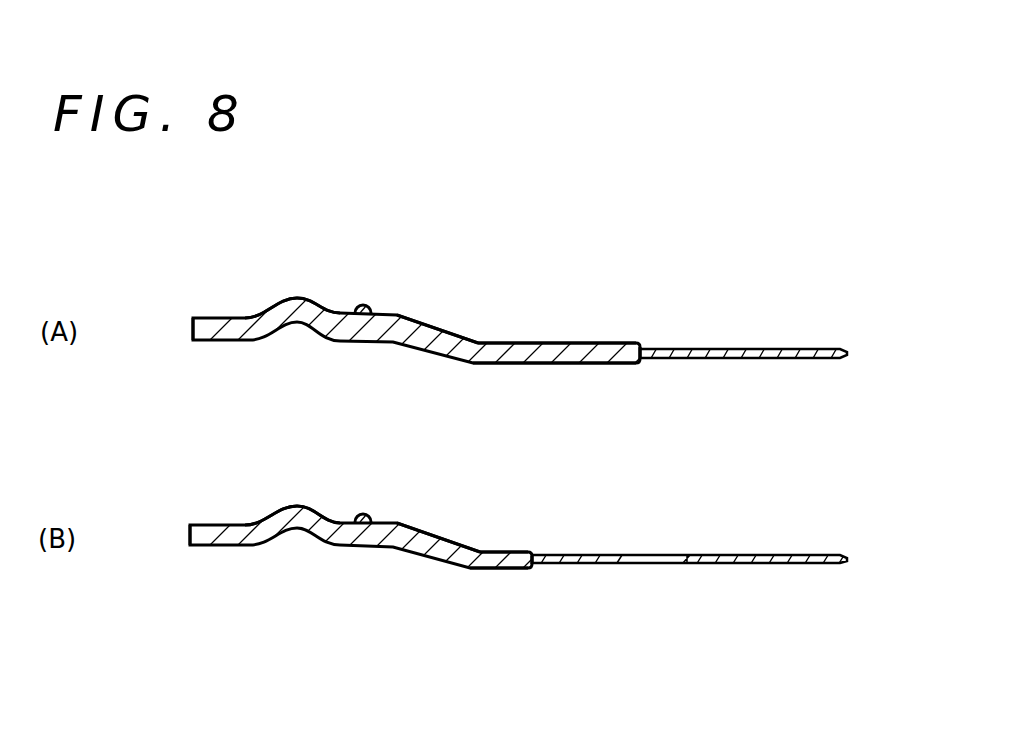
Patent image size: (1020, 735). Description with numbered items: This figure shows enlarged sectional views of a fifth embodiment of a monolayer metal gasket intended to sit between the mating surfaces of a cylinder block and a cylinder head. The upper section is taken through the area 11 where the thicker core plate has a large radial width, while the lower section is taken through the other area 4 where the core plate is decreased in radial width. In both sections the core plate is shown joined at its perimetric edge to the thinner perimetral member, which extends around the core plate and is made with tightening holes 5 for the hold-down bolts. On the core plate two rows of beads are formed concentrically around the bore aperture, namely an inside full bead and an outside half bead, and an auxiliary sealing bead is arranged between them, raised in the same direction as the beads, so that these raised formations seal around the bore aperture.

The area where the core plate is decreased in radial width 4 is at (493, 562).
The tightening hole 5 is at (630, 563).
The area where the core plate has the large radial width 11 is at (573, 350).